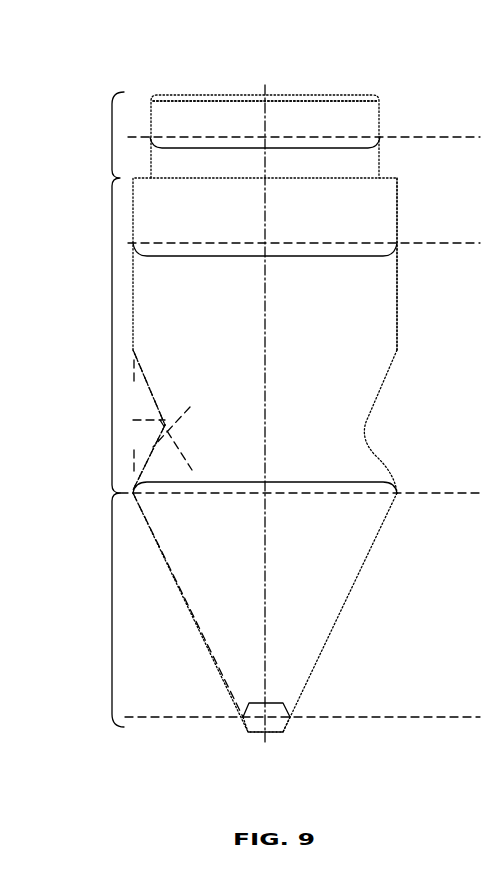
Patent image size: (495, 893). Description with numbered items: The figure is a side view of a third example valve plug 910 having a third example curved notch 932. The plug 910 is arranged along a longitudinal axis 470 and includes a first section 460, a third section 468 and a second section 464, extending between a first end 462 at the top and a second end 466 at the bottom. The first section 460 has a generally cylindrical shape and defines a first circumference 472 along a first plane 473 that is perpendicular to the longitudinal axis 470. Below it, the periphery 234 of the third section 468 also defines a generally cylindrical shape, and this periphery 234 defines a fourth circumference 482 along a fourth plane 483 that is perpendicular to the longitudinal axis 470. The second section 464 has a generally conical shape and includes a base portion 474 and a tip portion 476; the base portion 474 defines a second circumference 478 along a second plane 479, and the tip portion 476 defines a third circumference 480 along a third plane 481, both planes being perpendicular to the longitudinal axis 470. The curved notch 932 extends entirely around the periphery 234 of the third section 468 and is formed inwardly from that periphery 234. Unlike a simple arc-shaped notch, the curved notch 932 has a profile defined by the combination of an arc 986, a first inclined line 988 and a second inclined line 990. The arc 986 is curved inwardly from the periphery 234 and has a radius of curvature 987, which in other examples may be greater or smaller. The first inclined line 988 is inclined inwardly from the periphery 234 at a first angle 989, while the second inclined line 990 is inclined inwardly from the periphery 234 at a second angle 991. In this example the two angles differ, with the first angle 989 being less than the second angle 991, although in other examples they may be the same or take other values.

The valve plug 910 is at (388, 80).
The first end 462 is at (300, 95).
The first plane 473 is at (415, 137).
The first section 460 is at (112, 137).
The first circumference 472 is at (314, 148).
The fourth plane 483 is at (415, 243).
The third section 468 is at (112, 252).
The fourth circumference 482 is at (320, 256).
The periphery 234 is at (398, 302).
The first angle 989 is at (136, 372).
The radius of curvature 987 is at (137, 423).
The second inclined line 990 is at (193, 406).
The first inclined line 988 is at (192, 468).
The arc 986 is at (142, 437).
The second circumference 478 is at (328, 482).
The curved notch 932 is at (372, 447).
The second plane 479 is at (422, 493).
The second angle 991 is at (137, 463).
The base portion 474 is at (388, 507).
The longitudinal axis 470 is at (265, 638).
The second section 464 is at (112, 605).
The third circumference 480 is at (283, 703).
The third plane 481 is at (395, 717).
The second end 466 is at (258, 733).
The tip portion 476 is at (285, 728).